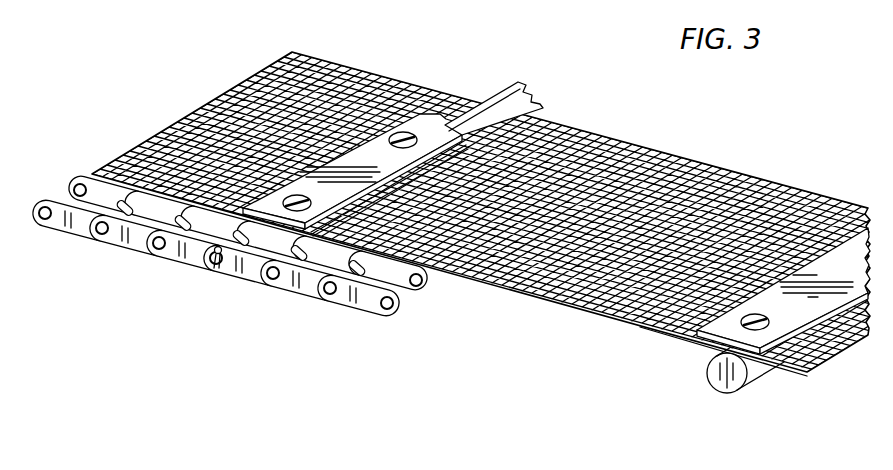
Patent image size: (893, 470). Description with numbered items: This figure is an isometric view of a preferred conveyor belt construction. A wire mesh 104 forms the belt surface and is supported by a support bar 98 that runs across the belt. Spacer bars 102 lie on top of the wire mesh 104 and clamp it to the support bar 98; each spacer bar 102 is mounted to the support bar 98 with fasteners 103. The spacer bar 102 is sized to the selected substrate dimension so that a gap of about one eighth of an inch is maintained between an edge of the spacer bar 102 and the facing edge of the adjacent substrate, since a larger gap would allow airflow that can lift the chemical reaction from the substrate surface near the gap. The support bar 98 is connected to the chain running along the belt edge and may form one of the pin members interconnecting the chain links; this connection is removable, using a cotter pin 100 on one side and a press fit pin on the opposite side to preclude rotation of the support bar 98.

The support bar 98 is at (517, 80).
The cotter pin 100 is at (213, 272).
The spacer bar 102 is at (408, 123).
The fastener 103 is at (290, 195).
The wire mesh 104 is at (350, 97).